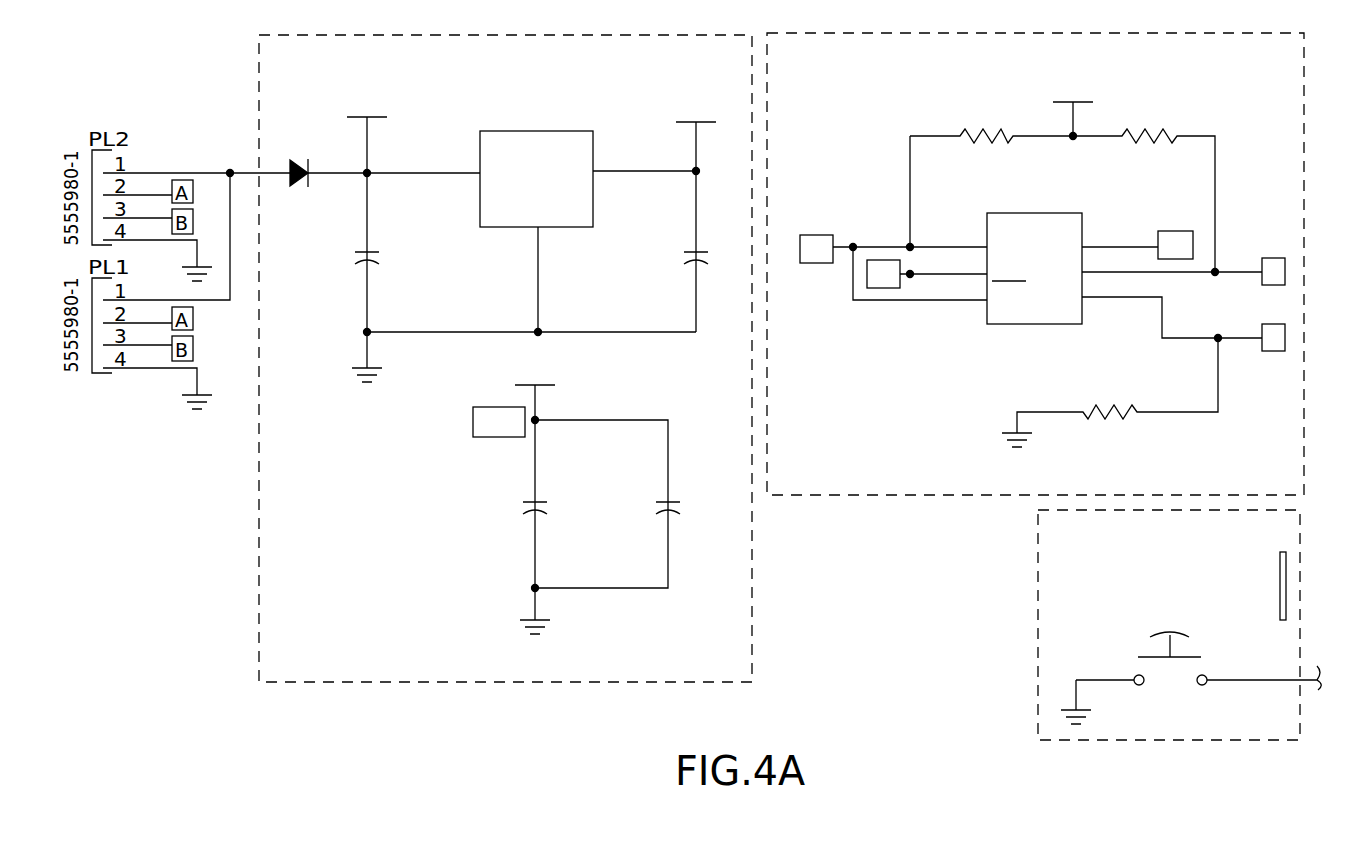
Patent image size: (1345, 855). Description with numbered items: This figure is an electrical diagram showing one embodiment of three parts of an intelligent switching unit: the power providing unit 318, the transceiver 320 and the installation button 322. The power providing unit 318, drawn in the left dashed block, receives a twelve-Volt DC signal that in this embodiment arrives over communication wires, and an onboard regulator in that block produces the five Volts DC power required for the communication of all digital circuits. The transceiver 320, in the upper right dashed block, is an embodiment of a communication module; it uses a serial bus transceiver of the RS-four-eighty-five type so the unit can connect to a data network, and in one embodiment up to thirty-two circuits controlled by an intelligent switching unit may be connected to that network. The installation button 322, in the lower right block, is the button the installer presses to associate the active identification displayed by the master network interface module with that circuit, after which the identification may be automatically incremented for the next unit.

The power providing unit 318 is at (261, 578).
The transceiver 320 is at (935, 497).
The installation button 322 is at (1045, 640).